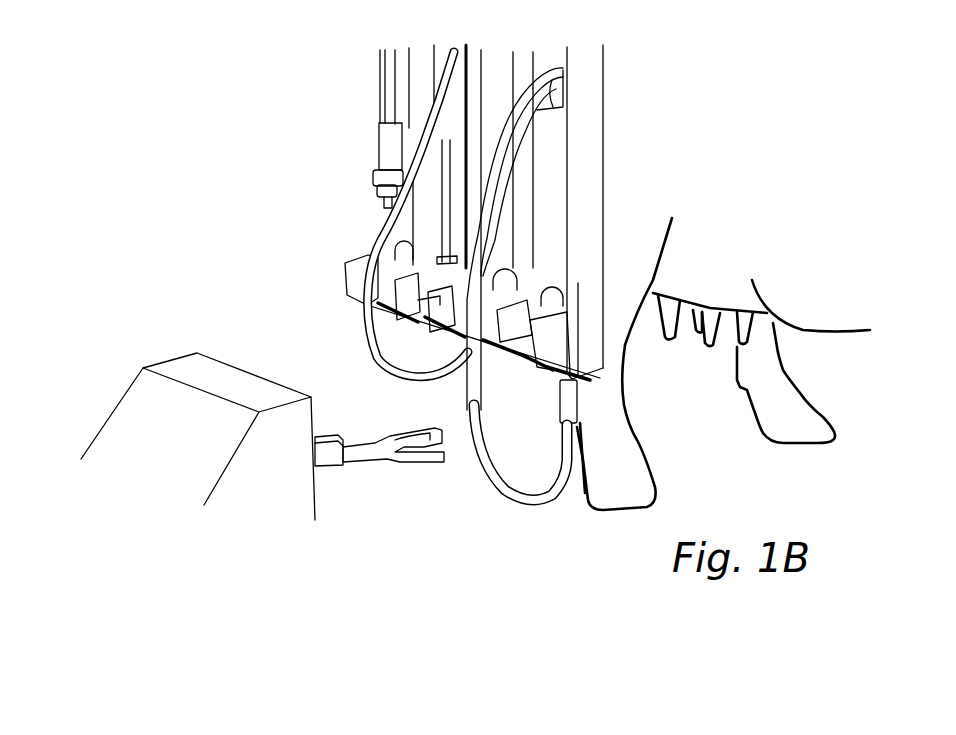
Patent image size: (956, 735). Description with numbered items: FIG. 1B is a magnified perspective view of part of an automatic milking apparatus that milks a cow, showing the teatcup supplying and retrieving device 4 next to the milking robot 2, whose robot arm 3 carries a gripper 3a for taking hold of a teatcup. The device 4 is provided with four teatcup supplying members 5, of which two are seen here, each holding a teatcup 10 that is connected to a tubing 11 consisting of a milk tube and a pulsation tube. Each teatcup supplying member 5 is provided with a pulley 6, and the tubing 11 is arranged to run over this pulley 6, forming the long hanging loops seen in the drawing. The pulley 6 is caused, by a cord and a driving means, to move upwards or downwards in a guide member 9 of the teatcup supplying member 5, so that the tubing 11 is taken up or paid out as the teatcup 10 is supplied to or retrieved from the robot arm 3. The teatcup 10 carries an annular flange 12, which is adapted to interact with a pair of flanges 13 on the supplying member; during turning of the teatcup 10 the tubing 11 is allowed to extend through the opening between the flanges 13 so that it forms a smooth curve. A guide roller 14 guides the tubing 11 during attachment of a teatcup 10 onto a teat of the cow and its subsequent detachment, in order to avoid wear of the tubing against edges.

The milking robot 2 is at (178, 367).
The robot arm 3 is at (323, 466).
The gripper 3a is at (405, 462).
The teatcup supplying and retrieving device 4 is at (348, 95).
The teatcup supplying member 5 is at (343, 263).
The pulley 6 is at (563, 85).
The guide member 9 is at (558, 203).
The teatcup 10 is at (379, 140).
The tubing 11 is at (525, 508).
The annular flange 12 is at (375, 173).
The flanges 13 is at (508, 357).
The guide roller 14 is at (567, 287).